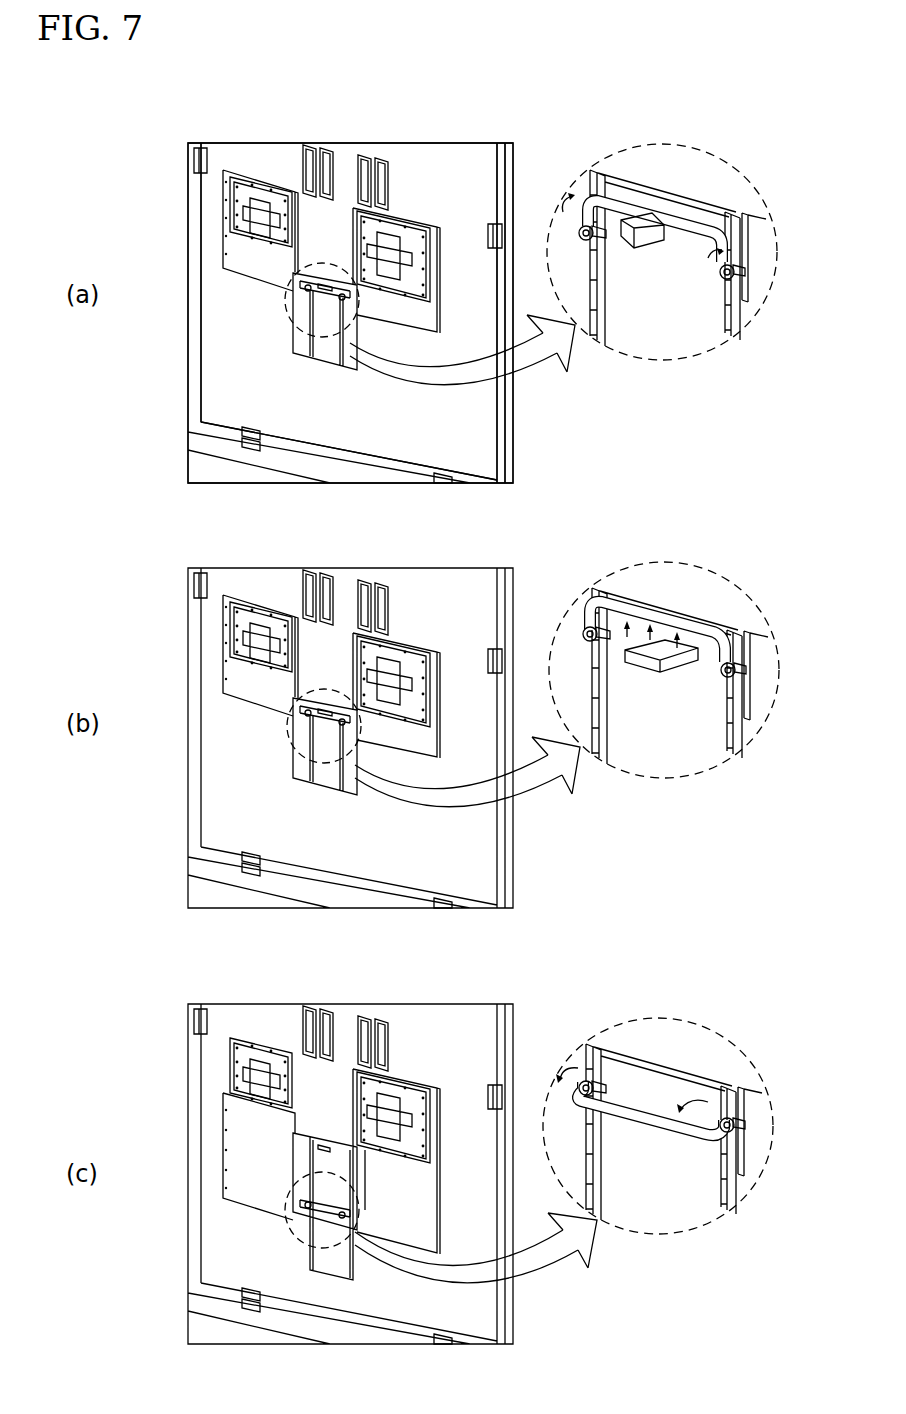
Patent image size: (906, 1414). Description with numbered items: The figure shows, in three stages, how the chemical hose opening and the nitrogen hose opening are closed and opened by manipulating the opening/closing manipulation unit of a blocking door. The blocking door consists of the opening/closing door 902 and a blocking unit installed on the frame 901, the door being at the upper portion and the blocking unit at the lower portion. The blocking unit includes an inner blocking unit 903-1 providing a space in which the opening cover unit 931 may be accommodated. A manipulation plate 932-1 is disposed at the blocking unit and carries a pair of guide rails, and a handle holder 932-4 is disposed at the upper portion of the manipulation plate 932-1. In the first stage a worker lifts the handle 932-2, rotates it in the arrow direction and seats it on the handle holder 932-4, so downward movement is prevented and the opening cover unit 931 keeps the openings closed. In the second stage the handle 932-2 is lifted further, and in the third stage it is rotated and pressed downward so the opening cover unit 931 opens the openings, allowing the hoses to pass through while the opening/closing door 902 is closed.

The frame 901 is at (195, 220).
The opening/closing door 902 is at (470, 1062).
The opening cover unit 931 is at (222, 272).
The inner blocking unit 903-1 is at (240, 372).
The manipulation plate 932-1 is at (333, 350).
The handle 932-2 is at (673, 213).
The handle holder 932-4 is at (644, 236).